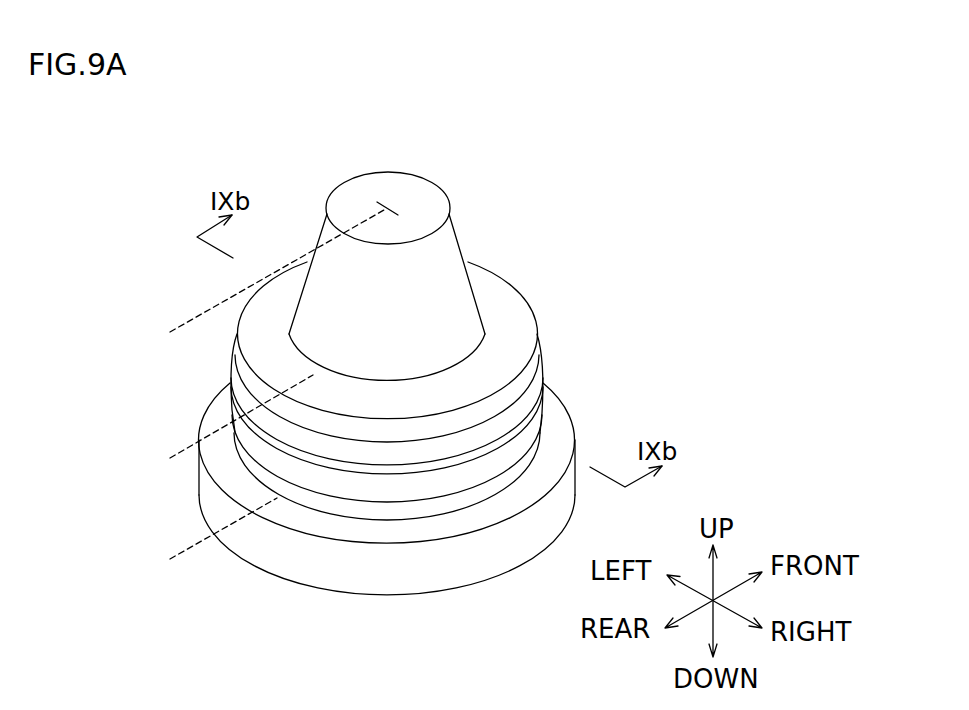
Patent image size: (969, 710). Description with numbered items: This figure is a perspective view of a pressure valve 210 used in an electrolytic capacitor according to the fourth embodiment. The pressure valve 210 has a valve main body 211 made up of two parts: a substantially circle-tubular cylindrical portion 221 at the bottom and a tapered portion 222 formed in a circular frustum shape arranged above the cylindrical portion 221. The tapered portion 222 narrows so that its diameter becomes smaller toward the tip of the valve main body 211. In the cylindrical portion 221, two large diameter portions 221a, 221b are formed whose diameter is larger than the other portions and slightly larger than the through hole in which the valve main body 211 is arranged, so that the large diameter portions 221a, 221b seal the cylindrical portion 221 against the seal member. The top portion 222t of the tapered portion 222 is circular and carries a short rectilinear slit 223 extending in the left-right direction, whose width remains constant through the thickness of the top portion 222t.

The pressure valve 210 is at (525, 139).
The valve main body 211 is at (513, 265).
The cylindrical portion 221 is at (170, 462).
The large diameter portion 221a is at (541, 377).
The large diameter portion 221b is at (540, 411).
The tapered portion 222 is at (170, 332).
The top portion 222t is at (355, 190).
The slit 223 is at (398, 214).